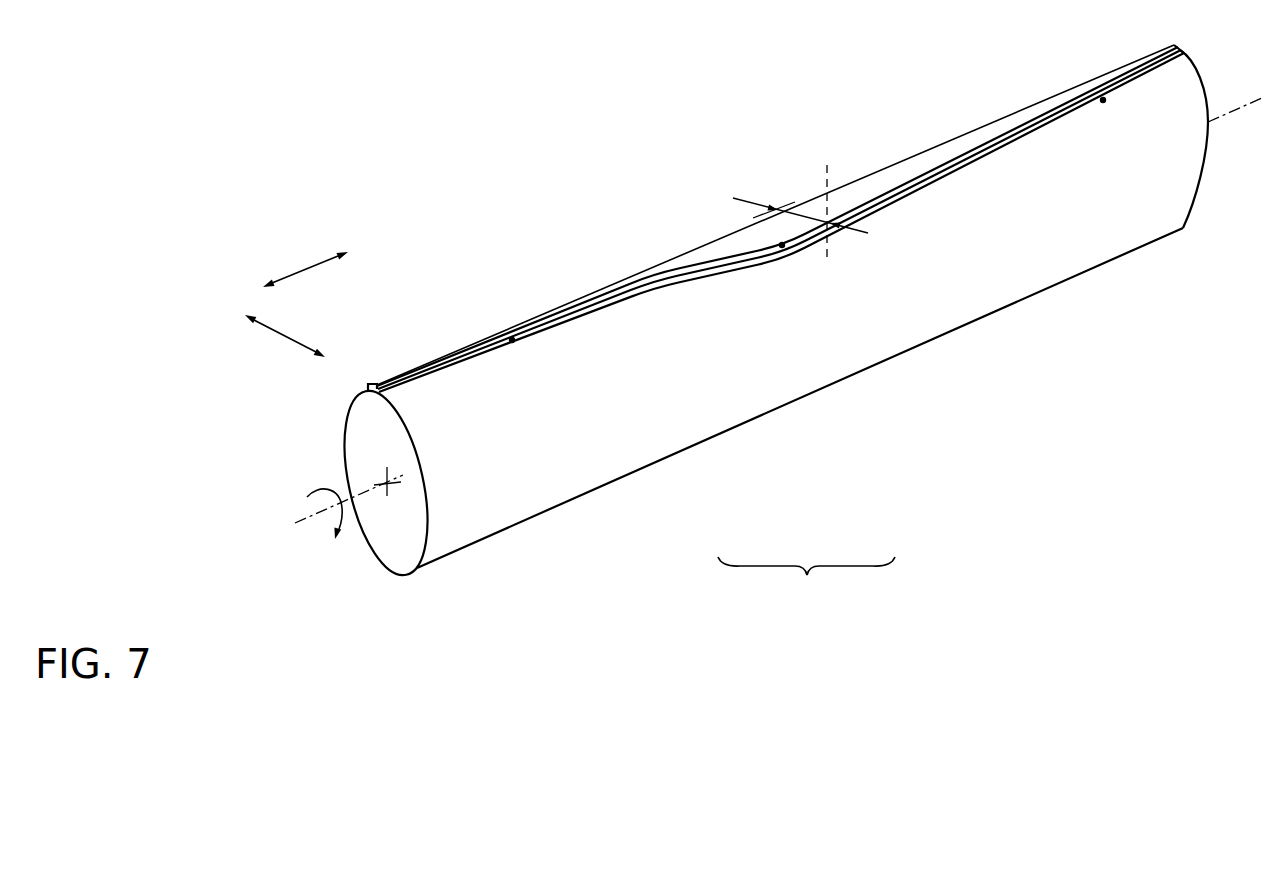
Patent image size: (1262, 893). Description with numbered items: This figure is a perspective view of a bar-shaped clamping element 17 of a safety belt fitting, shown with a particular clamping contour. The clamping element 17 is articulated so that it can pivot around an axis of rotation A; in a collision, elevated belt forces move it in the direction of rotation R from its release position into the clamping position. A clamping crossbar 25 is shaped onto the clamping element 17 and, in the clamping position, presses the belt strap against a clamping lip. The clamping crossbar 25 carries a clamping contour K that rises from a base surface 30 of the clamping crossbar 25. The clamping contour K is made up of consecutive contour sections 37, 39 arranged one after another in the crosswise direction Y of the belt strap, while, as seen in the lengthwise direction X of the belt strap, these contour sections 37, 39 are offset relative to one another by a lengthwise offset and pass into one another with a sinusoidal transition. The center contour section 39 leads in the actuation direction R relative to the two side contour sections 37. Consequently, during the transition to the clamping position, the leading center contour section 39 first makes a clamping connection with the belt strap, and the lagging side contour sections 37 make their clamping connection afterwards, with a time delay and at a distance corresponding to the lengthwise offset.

The clamping element 17 is at (478, 542).
The clamping crossbar 25 is at (935, 154).
The base surface 30 is at (512, 340).
The center contour section 39 is at (782, 245).
The side contour section 37 is at (1103, 100).
The clamping contour K is at (806, 582).
The axis of rotation A is at (307, 517).
The direction of rotation R is at (330, 490).
The lengthwise direction of the belt strap X is at (285, 342).
The crosswise direction of the belt strap Y is at (305, 263).